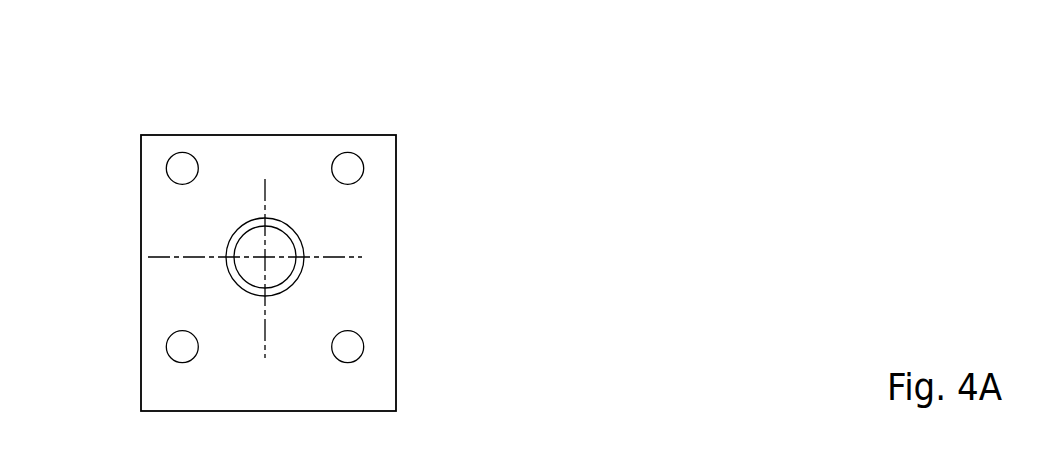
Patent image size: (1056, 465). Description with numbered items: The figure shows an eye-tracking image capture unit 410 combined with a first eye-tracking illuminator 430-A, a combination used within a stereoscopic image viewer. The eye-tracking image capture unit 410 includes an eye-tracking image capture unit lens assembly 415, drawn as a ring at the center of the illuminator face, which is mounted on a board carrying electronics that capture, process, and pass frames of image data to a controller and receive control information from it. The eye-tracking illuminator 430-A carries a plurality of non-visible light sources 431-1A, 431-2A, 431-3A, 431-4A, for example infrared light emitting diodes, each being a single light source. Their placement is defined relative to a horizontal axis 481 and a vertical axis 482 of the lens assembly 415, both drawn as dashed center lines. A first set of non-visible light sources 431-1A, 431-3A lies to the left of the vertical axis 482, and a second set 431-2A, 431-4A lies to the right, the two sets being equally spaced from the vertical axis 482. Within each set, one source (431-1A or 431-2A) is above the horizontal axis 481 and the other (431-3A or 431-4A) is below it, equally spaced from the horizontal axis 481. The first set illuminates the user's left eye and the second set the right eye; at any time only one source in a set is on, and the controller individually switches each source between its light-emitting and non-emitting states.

The first eye-tracking illuminator 430-A is at (219, 272).
The non-visible light source 431-1A is at (168, 102).
The non-visible light source 431-2A is at (365, 107).
The non-visible light source 431-3A is at (123, 369).
The non-visible light source 431-4A is at (418, 383).
The eye-tracking image capture unit 410 is at (275, 283).
The eye-tracking image capture unit lens assembly 415 is at (308, 244).
The horizontal axis 481 is at (293, 280).
The vertical axis 482 is at (290, 254).